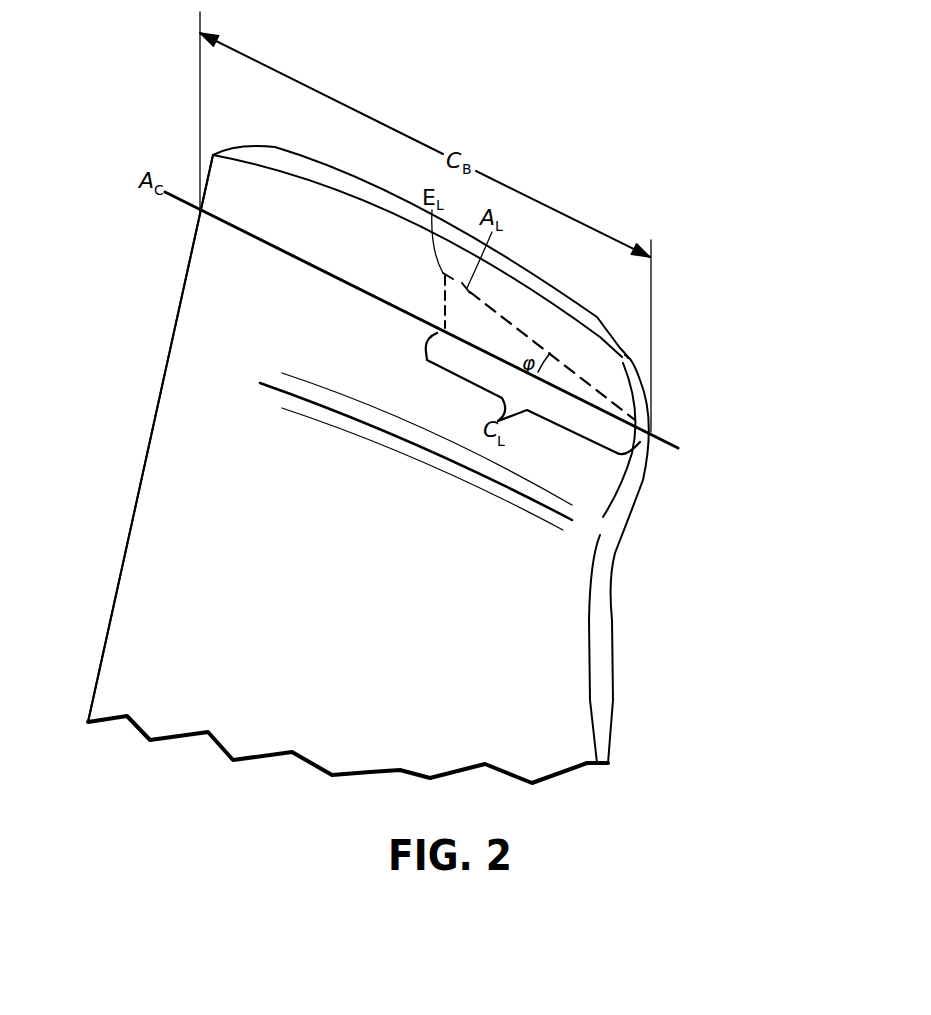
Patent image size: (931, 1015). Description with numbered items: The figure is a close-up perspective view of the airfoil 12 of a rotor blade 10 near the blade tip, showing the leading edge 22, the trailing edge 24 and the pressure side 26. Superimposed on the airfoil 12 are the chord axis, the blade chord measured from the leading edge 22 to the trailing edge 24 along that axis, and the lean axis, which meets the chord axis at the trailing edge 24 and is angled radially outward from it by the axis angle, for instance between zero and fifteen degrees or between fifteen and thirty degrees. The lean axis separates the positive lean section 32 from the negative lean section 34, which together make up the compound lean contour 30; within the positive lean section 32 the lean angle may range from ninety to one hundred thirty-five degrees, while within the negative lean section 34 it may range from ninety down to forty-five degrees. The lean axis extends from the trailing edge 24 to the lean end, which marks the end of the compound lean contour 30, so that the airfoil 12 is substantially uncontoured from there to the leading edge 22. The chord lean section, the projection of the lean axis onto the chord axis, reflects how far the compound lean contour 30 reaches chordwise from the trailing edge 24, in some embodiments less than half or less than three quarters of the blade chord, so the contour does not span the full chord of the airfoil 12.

The rotor blade 10 is at (597, 98).
The airfoil 12 is at (122, 493).
The leading edge 22 is at (113, 585).
The trailing edge 24 is at (613, 658).
The pressure side 26 is at (239, 670).
The compound lean contour 30 is at (737, 372).
The positive lean section 32 is at (678, 372).
The negative lean section 34 is at (678, 448).